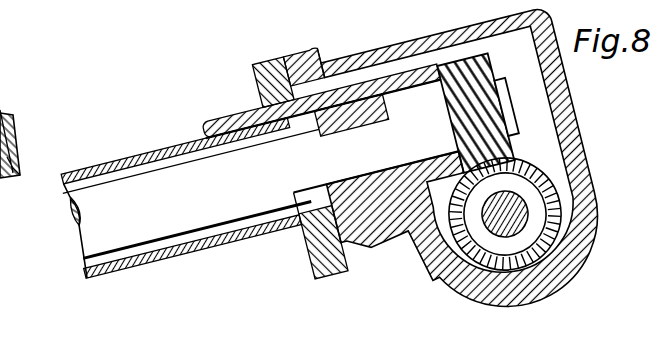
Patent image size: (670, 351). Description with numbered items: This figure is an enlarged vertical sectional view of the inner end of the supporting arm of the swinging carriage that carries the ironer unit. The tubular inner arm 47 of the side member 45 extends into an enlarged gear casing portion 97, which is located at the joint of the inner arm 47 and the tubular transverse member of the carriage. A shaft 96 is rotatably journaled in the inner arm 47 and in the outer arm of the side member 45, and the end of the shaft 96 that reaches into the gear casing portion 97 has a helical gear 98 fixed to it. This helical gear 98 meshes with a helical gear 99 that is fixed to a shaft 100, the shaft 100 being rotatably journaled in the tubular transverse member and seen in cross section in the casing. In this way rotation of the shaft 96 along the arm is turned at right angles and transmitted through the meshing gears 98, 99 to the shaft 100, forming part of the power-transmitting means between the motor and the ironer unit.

The side member 45 is at (63, 185).
The inner arm 47 is at (207, 248).
The shaft 96 is at (92, 207).
The enlarged gear casing portion 97 is at (433, 35).
The helical gear 98 is at (485, 75).
The helical gear 99 is at (543, 182).
The shaft 100 is at (532, 223).